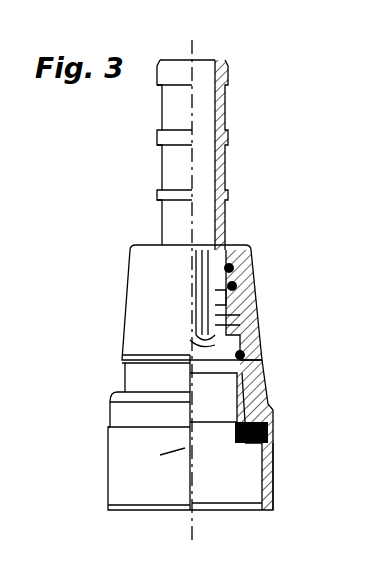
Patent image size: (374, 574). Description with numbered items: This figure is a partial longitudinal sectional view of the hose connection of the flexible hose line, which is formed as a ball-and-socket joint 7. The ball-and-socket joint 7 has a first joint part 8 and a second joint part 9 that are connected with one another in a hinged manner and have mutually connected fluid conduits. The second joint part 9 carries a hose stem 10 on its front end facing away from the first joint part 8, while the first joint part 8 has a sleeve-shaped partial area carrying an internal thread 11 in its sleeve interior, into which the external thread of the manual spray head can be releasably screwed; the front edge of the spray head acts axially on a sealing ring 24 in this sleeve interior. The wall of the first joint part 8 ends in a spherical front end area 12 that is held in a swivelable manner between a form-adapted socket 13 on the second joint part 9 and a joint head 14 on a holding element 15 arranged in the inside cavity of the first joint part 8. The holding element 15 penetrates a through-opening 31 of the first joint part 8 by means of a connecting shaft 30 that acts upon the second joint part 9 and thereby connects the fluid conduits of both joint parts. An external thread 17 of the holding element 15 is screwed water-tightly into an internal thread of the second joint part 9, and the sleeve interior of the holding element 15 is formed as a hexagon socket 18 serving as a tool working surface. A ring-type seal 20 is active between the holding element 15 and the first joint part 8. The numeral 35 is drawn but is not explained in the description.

The ball-and-socket joint 7 is at (302, 310).
The first joint part 8 is at (272, 413).
The second joint part 9 is at (260, 300).
The hose stem 10 is at (218, 168).
The internal thread 11 is at (266, 476).
The spherical front end area 12 is at (246, 354).
The socket 13 is at (228, 300).
The joint head 14 is at (210, 366).
The holding element 15 is at (238, 282).
The external thread 17 is at (195, 278).
The hexagon socket 18 is at (234, 264).
The ring-type seal 20 is at (232, 355).
The sealing ring 24 is at (161, 474).
The connecting shaft 30 is at (357, 291).
The through-opening 31 is at (347, 340).
The guide surface 35 is at (200, 284).